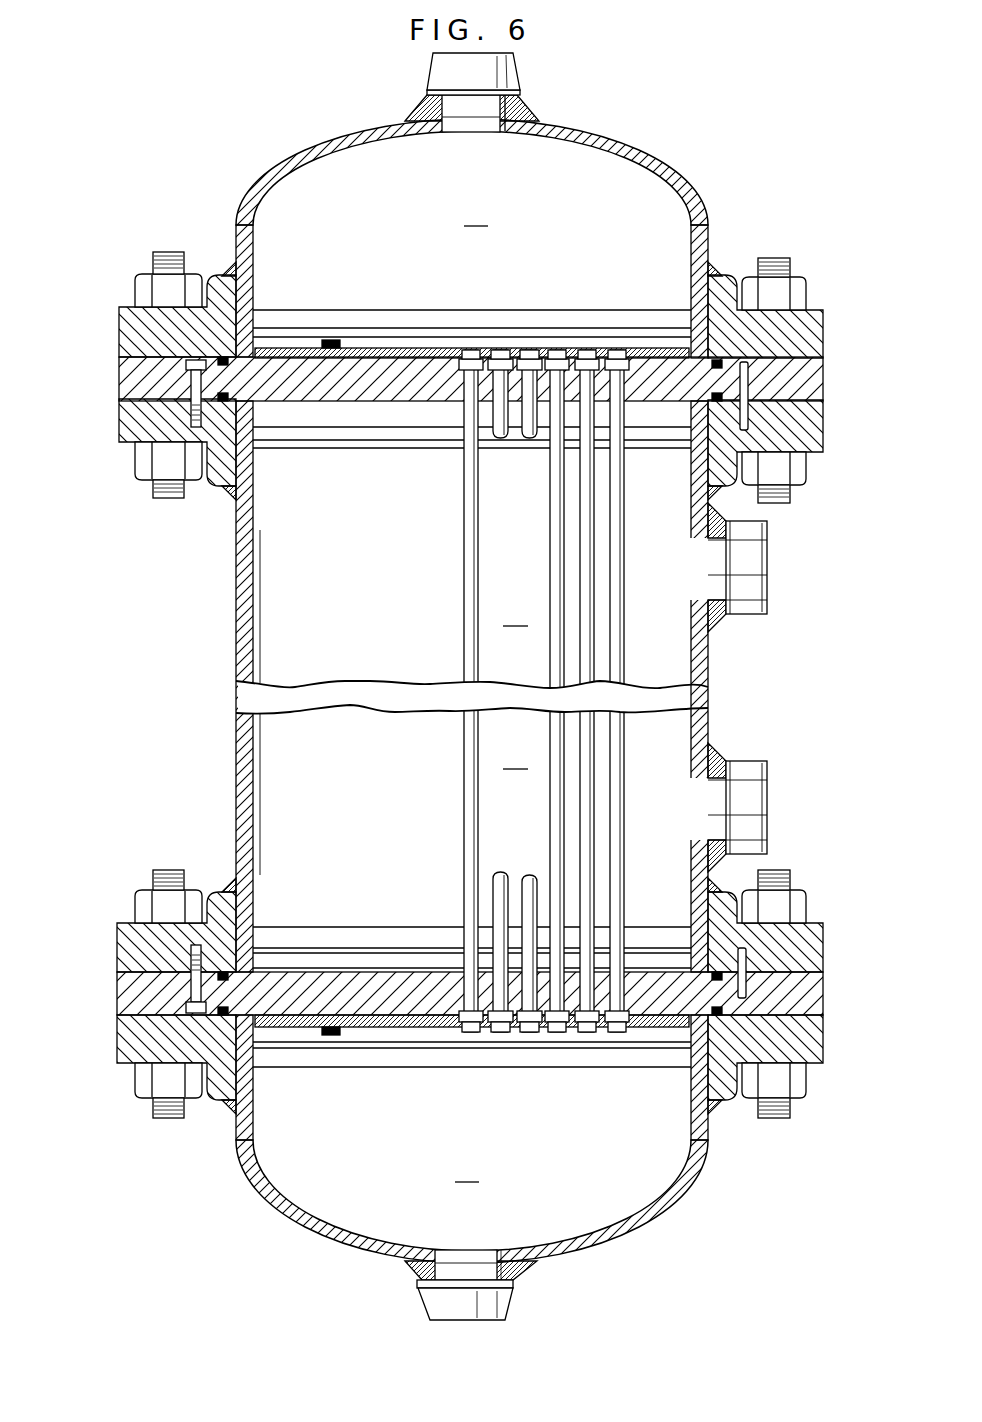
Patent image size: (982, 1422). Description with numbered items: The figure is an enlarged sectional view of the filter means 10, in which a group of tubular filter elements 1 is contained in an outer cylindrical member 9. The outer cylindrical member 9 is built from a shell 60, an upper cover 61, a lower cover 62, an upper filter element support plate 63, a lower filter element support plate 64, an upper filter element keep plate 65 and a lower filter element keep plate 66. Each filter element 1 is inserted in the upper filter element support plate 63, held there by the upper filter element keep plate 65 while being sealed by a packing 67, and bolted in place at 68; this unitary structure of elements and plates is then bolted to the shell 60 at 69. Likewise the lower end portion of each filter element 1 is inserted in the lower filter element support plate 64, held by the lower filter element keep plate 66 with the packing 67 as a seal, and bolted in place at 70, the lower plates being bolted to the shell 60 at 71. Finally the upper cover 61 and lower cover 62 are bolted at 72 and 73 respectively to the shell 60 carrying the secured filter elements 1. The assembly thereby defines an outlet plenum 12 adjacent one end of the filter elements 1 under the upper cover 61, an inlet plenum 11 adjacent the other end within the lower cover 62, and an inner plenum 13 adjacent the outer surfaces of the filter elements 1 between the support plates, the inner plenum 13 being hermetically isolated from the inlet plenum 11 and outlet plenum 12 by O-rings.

The filter element 1 is at (466, 606).
The outer cylindrical member 9 is at (690, 876).
The filter means 10 is at (469, 686).
The inlet plenum 11 is at (470, 1169).
The outlet plenum 12 is at (479, 213).
The inner plenum 13 is at (518, 684).
The shell 60 is at (700, 678).
The upper cover 61 is at (668, 156).
The lower cover 62 is at (642, 1222).
The upper filter element support plate 63 is at (810, 374).
The lower filter element support plate 64 is at (810, 994).
The upper filter element keep plate 65 is at (411, 348).
The lower filter element keep plate 66 is at (412, 1030).
The packing 67 is at (456, 366).
The bolt 68 is at (338, 340).
The bolt 69 is at (192, 414).
The bolt 70 is at (332, 1038).
The bolt 71 is at (188, 962).
The bolt 72 is at (790, 290).
The bolt 73 is at (138, 896).